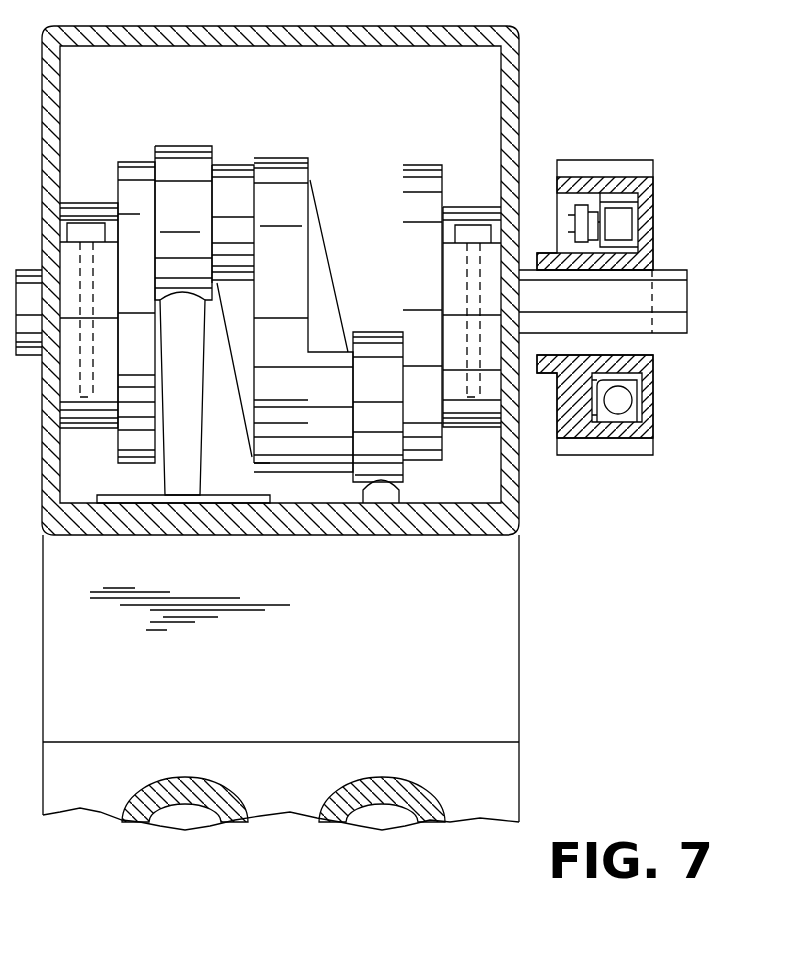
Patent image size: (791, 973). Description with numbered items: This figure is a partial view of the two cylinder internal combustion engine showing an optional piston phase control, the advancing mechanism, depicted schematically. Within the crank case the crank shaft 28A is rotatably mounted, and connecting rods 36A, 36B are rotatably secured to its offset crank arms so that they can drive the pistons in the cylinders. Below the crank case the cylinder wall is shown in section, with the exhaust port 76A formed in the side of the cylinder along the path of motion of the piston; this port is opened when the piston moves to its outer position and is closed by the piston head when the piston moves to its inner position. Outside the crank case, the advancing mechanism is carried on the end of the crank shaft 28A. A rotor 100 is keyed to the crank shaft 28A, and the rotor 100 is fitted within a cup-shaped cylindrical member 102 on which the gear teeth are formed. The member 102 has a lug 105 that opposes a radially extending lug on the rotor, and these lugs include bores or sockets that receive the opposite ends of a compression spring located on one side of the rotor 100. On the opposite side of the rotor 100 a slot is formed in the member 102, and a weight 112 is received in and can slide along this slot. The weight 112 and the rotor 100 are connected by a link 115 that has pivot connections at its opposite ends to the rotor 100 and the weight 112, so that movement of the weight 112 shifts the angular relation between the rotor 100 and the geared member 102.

The link 115 is at (583, 212).
The weight 112 is at (640, 222).
The crank shaft 28A is at (675, 333).
The lug 105 is at (647, 386).
The cup-shaped cylindrical member 102 is at (645, 406).
The rotor 100 is at (552, 403).
The connecting rod 36B is at (190, 438).
The connecting rod 36A is at (392, 490).
The exhaust port 76A is at (408, 800).